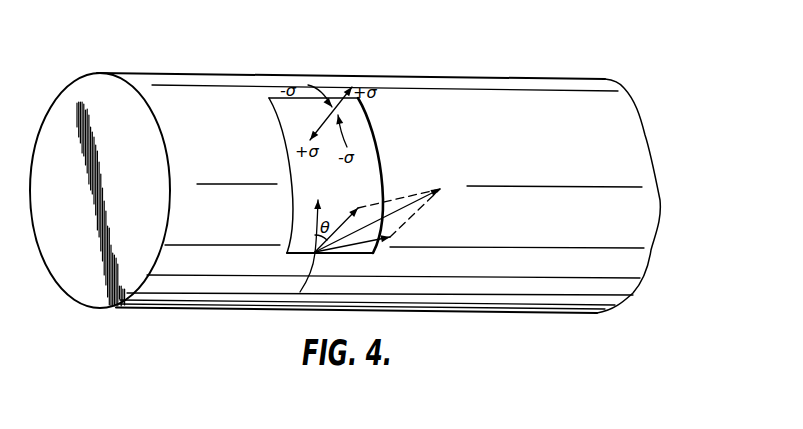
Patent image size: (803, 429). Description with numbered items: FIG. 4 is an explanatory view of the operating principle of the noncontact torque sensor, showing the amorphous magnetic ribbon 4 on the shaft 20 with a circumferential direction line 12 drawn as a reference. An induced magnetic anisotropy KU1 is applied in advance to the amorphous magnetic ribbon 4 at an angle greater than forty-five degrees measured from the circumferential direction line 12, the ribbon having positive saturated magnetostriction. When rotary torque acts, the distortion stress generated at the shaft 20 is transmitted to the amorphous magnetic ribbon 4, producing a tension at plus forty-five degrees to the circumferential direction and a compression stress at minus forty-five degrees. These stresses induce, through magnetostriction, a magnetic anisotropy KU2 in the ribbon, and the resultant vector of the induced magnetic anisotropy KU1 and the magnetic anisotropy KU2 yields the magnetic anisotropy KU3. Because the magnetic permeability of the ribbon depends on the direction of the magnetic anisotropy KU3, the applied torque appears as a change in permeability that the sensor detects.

The shaft 20 is at (500, 97).
The amorphous magnetic ribbon 4 is at (291, 205).
The circumferential direction line 12 is at (303, 285).
The induced magnetic anisotropy KU1 is at (366, 249).
The magnetic anisotropy KU2 is at (342, 220).
The magnetic anisotropy KU3 is at (404, 207).